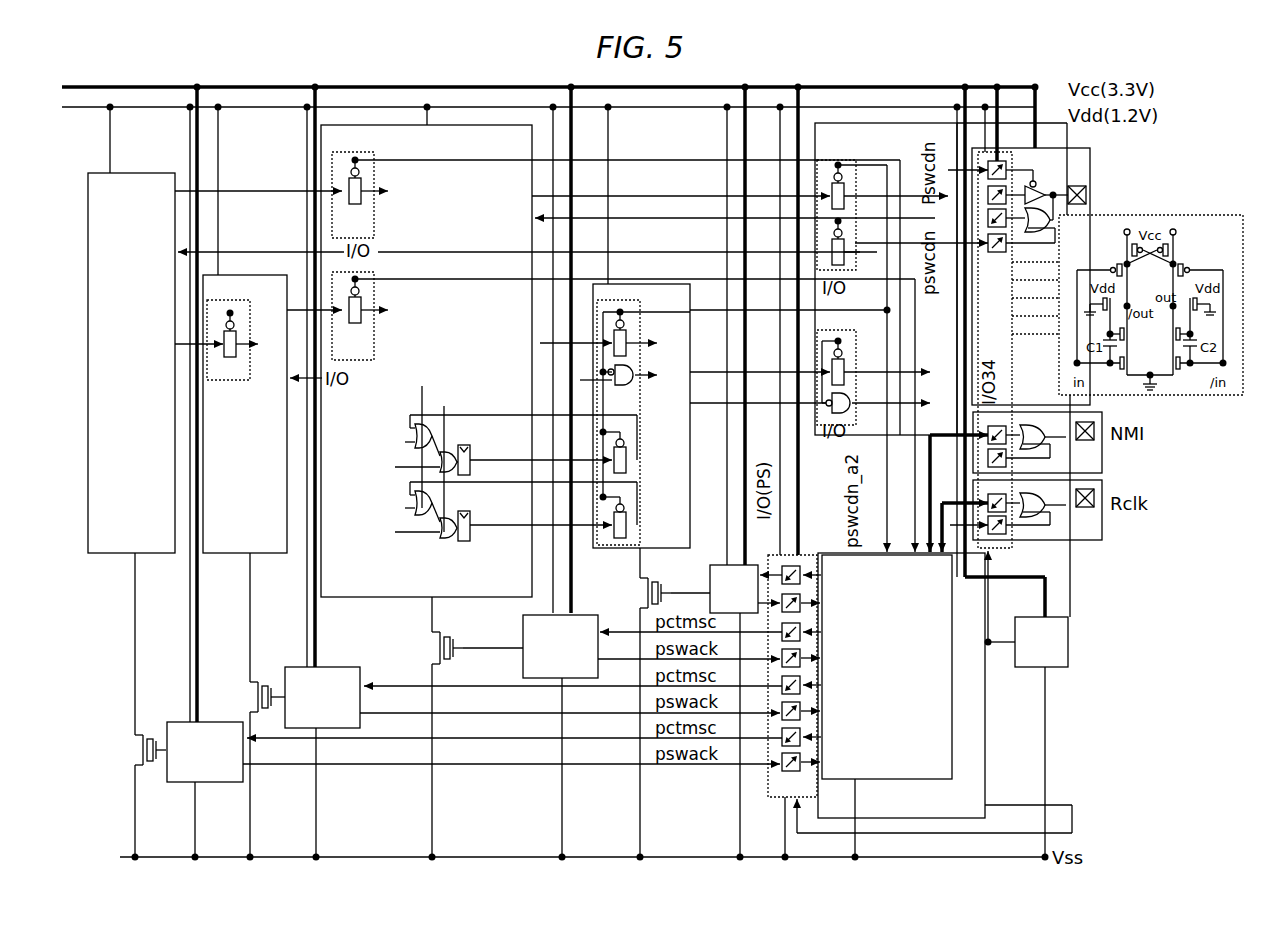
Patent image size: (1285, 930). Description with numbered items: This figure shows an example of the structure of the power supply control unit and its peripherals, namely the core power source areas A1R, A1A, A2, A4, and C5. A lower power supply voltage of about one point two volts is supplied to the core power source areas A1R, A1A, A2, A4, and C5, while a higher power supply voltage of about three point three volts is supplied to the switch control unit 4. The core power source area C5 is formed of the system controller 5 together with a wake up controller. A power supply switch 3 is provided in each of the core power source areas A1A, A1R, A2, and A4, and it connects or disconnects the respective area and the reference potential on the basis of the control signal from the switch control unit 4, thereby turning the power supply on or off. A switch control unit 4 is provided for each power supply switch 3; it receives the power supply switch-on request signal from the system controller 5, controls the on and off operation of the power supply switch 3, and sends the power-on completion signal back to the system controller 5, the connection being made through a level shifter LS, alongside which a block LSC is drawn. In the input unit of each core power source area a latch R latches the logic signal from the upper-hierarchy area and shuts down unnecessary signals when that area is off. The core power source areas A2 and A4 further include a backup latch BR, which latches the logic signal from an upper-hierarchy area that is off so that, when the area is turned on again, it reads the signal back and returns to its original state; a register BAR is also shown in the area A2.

The core power source area A1R is at (88, 194).
The core power source area A1A is at (245, 414).
The core power source area A2 is at (479, 373).
The core power source area A4 is at (657, 416).
The backup latch BR is at (641, 406).
The boot address register BAR is at (534, 457).
The latch R is at (393, 216).
The power supply switch 3 is at (145, 750).
The switch control unit 4 is at (176, 722).
The system controller 5 is at (953, 752).
The level shifter LS is at (776, 798).
The level shifter controller LSC is at (1027, 642).
The core power source area C5 is at (1073, 800).